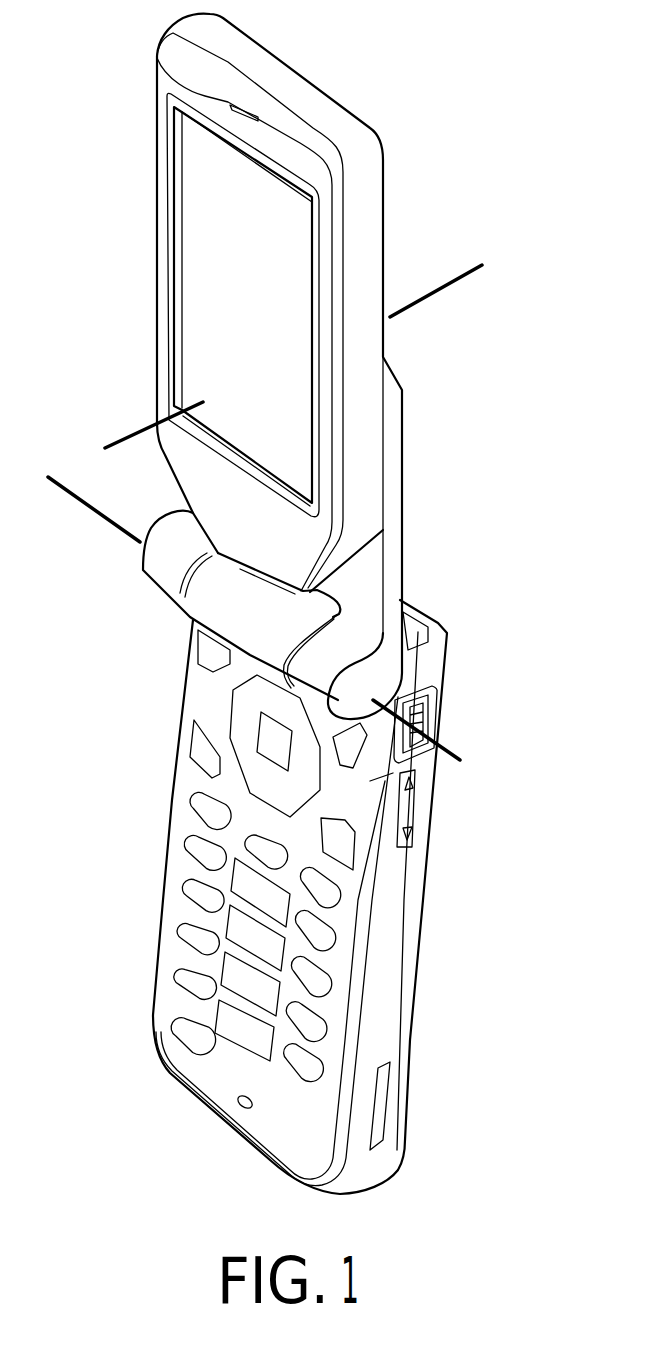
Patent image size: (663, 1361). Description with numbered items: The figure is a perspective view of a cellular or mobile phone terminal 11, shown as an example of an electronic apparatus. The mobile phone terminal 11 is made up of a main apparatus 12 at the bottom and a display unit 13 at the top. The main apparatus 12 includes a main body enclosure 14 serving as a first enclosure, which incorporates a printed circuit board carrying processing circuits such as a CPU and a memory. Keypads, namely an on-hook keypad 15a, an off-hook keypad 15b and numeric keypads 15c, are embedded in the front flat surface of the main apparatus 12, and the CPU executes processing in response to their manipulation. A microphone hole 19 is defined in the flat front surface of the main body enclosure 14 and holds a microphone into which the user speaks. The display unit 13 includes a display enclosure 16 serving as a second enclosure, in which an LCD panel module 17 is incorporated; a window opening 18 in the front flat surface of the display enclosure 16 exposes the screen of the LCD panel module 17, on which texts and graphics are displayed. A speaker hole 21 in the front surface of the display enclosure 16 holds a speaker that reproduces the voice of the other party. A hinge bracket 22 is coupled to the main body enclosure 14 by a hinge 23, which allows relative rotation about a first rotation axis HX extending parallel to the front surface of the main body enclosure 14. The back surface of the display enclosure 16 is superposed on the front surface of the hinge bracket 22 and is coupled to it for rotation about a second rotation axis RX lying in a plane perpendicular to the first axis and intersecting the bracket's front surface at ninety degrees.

The mobile phone terminal 11 is at (410, 97).
The main apparatus 12 is at (185, 733).
The display unit 13 is at (158, 111).
The main body enclosure 14 is at (393, 1003).
The on-hook keypad 15a is at (198, 801).
The off-hook keypad 15b is at (333, 893).
The numeric keypads 15c is at (195, 893).
The display enclosure 16 is at (373, 224).
The LCD panel module 17 is at (197, 298).
The window opening 18 is at (177, 220).
The microphone hole 19 is at (240, 1103).
The speaker hole 21 is at (158, 55).
The hinge bracket 22 is at (394, 536).
The hinge 23 is at (208, 623).